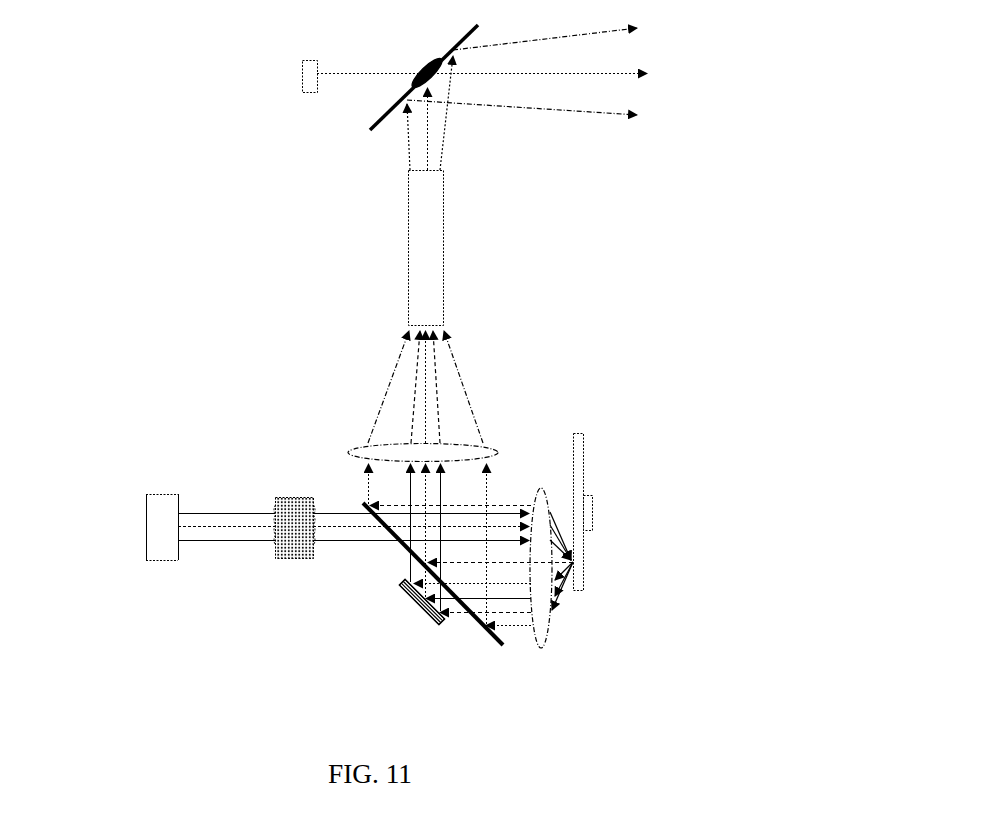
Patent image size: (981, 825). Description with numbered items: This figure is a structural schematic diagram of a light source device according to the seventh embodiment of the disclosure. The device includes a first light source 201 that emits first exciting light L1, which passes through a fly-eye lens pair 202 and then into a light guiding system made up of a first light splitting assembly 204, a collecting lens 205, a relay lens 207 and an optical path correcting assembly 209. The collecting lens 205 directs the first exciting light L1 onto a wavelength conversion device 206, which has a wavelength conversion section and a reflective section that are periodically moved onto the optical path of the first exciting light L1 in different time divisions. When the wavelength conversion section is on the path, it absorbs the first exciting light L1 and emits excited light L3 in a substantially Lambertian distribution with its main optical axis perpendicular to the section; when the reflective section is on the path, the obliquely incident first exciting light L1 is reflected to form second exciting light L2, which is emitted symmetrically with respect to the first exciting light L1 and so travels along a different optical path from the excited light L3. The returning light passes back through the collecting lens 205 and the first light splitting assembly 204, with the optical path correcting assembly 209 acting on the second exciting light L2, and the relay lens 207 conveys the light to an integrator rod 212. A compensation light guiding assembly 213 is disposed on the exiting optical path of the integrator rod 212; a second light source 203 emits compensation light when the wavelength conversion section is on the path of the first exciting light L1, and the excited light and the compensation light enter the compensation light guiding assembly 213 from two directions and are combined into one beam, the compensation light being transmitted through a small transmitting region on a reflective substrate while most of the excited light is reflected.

The first light source 201 is at (146, 515).
The fly-eye lens pair 202 is at (275, 500).
The second light source 203 is at (302, 72).
The first light splitting assembly 204 is at (473, 620).
The collecting lens 205 is at (538, 628).
The wavelength conversion device 206 is at (583, 478).
The relay lens 207 is at (497, 448).
The optical path correcting assembly 209 is at (410, 616).
The integrator rod 212 is at (408, 230).
The compensation light guiding assembly 213 is at (472, 38).
The first exciting light L1 is at (215, 543).
The second exciting light L2 is at (402, 578).
The excited light L3 is at (462, 378).